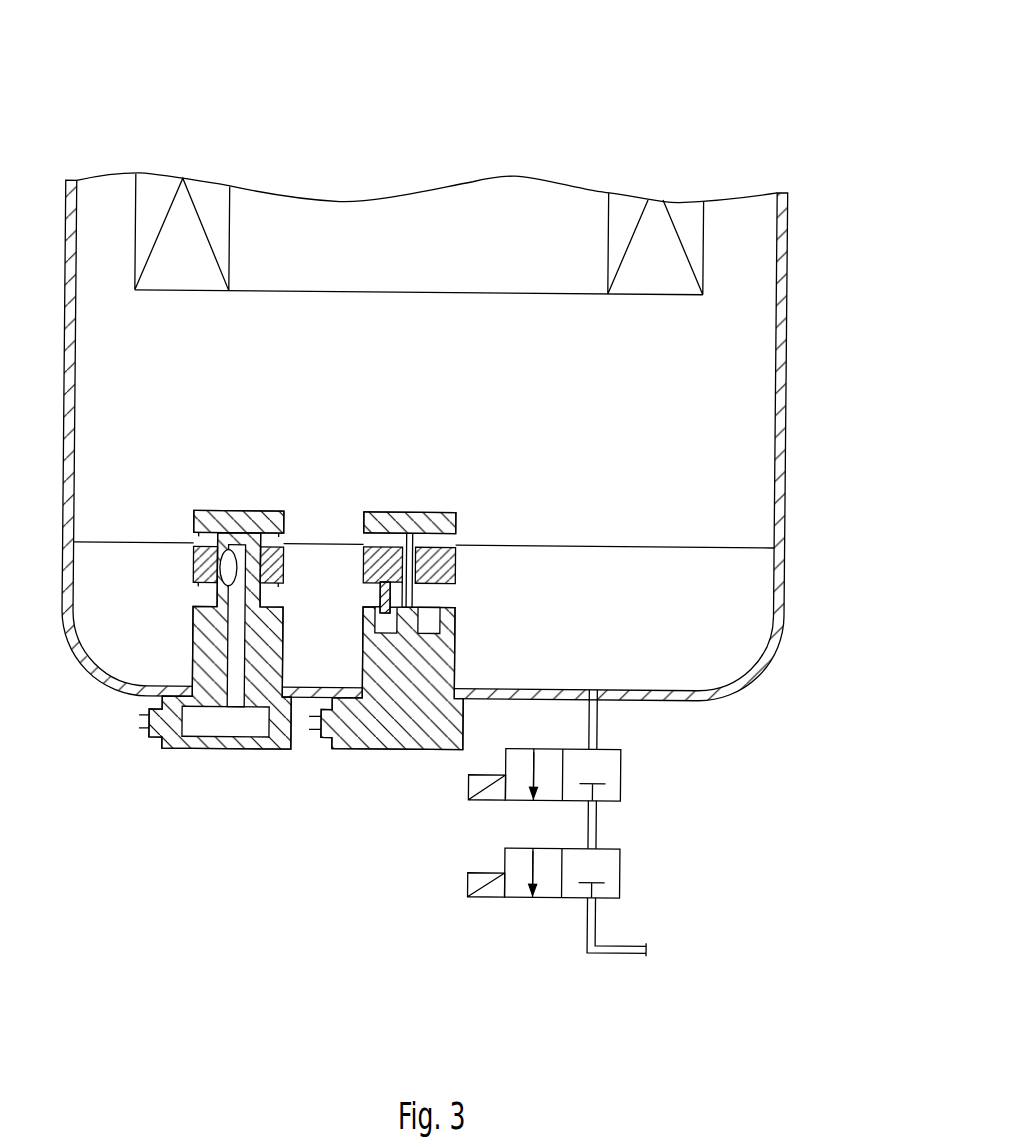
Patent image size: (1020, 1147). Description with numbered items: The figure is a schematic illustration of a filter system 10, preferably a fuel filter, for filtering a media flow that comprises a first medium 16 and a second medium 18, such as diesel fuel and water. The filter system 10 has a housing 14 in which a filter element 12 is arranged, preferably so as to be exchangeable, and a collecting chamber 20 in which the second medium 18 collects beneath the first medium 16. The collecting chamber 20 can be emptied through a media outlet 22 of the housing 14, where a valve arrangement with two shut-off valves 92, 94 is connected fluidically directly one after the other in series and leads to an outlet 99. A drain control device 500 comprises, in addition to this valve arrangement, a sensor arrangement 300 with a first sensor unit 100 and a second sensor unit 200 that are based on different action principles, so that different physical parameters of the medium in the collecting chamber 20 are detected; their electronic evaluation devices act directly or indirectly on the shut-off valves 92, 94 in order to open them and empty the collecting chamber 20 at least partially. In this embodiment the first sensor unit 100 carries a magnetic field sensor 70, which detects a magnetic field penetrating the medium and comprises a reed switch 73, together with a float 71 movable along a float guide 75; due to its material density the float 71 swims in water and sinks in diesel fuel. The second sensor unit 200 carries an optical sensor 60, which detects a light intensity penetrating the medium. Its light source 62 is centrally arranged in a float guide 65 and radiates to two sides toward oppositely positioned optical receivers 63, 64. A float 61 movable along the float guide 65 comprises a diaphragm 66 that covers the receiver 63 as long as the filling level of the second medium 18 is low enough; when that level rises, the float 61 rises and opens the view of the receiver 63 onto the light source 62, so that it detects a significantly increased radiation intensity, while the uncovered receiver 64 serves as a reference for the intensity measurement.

The filter system 10 is at (786, 160).
The filter element 12 is at (690, 238).
The housing 14 is at (785, 328).
The first medium 16 is at (735, 396).
The second medium 18 is at (738, 590).
The collecting chamber 20 is at (641, 490).
The media outlet 22 is at (592, 689).
The sensor arrangement 300 is at (184, 443).
The drain control device 500 is at (509, 430).
The first sensor unit 100 is at (218, 486).
The magnetic field sensor 70 is at (238, 598).
The second sensor unit 200 is at (411, 488).
The optical sensor 60 is at (418, 597).
The float guide 75 is at (258, 519).
The float 71 is at (285, 552).
The reed switch 73 is at (221, 570).
The float guide 65 is at (440, 518).
The float 61 is at (457, 554).
The diaphragm 66 is at (382, 599).
The optical receiver 63 is at (369, 624).
The light source 62 is at (432, 616).
The optical receiver 64 is at (457, 626).
The shut-off valve 92 is at (623, 769).
The shut-off valve 94 is at (623, 869).
The outlet 99 is at (654, 947).